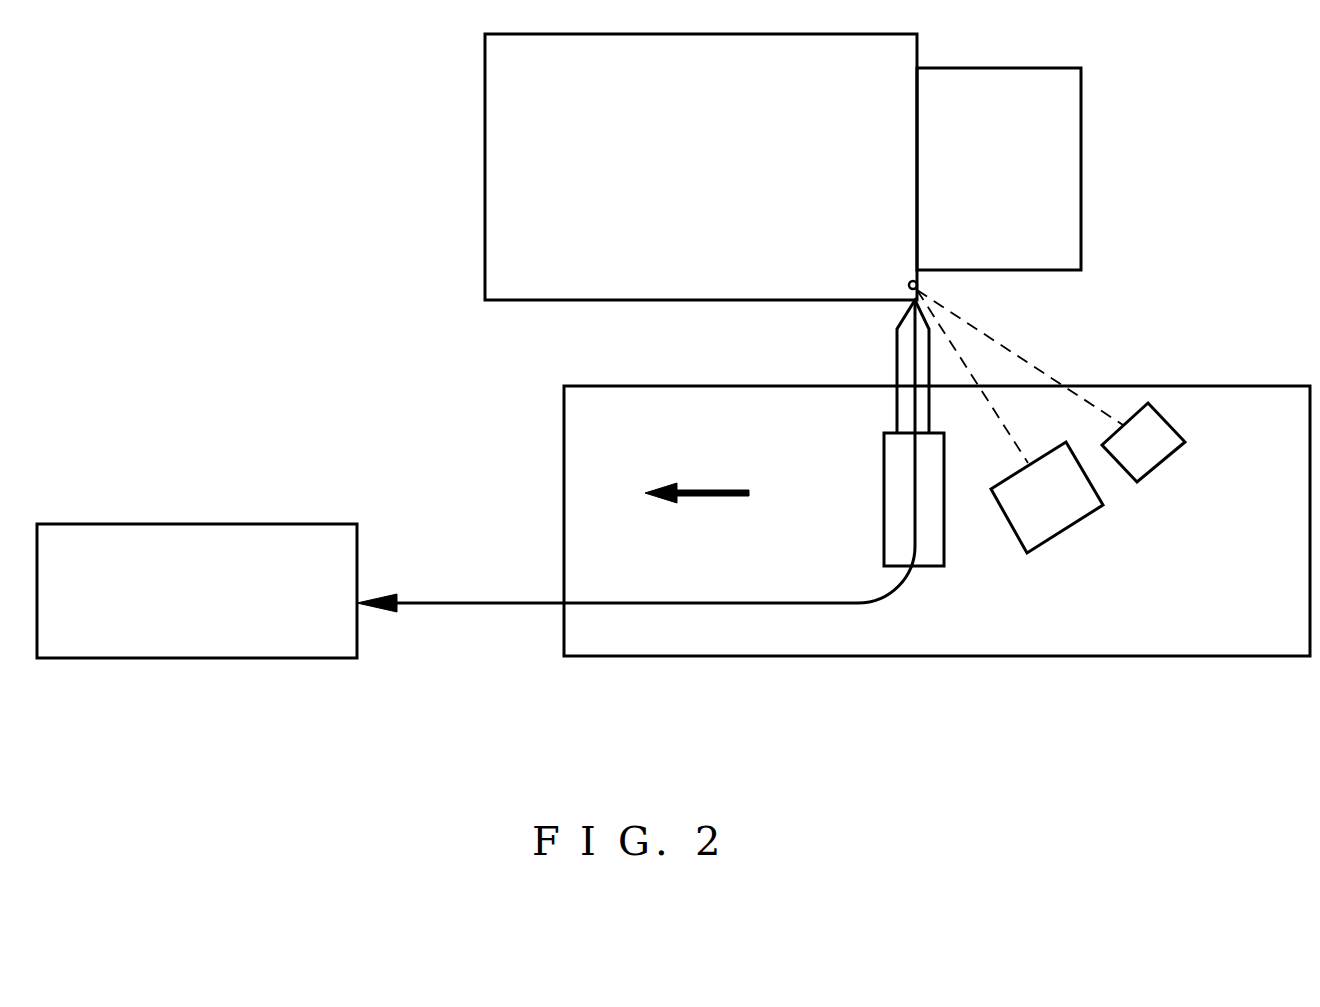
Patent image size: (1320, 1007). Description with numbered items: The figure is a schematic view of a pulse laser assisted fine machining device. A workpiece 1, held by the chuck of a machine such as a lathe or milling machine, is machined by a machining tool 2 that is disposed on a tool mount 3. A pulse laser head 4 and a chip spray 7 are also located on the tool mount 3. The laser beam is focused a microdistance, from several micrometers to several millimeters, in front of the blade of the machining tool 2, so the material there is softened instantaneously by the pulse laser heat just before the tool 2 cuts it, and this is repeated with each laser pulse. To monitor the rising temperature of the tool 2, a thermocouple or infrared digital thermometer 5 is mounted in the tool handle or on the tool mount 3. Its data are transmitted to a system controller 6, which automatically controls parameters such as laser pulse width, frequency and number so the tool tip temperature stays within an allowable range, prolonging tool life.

The workpiece 1 is at (515, 167).
The machining tool 2 is at (905, 345).
The tool mount 3 is at (1268, 423).
The pulse laser head 4 is at (1066, 510).
The thermocouple or infrared digital thermometer 5 is at (914, 414).
The system controller 6 is at (325, 542).
The chip spray 7 is at (1153, 453).